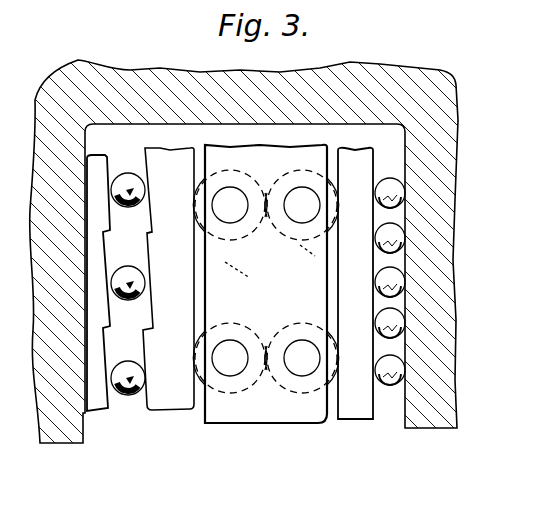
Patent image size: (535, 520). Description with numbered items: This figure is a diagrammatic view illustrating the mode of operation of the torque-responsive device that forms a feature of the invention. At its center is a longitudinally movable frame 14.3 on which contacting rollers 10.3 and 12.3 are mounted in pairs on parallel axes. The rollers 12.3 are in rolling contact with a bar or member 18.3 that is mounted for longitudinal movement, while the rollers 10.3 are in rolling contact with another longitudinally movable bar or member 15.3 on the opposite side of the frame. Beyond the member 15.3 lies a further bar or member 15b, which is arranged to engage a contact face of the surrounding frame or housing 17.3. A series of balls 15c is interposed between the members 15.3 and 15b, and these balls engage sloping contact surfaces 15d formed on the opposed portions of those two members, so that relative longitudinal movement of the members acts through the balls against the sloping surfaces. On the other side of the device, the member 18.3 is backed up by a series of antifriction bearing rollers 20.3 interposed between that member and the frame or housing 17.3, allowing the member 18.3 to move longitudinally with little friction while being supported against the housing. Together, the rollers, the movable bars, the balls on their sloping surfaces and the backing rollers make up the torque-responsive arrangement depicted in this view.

The rollers 10.3 is at (226, 395).
The rollers 12.3 is at (302, 395).
The longitudinally movable frame 14.3 is at (265, 418).
The bar or member 15.3 is at (165, 141).
The bar or member 15b is at (100, 156).
The balls 15c is at (125, 268).
The sloping contact surfaces 15d is at (153, 232).
The frame or housing 17.3 is at (60, 444).
The bar or member 18.3 is at (357, 410).
The antifriction bearing rollers 20.3 is at (378, 284).